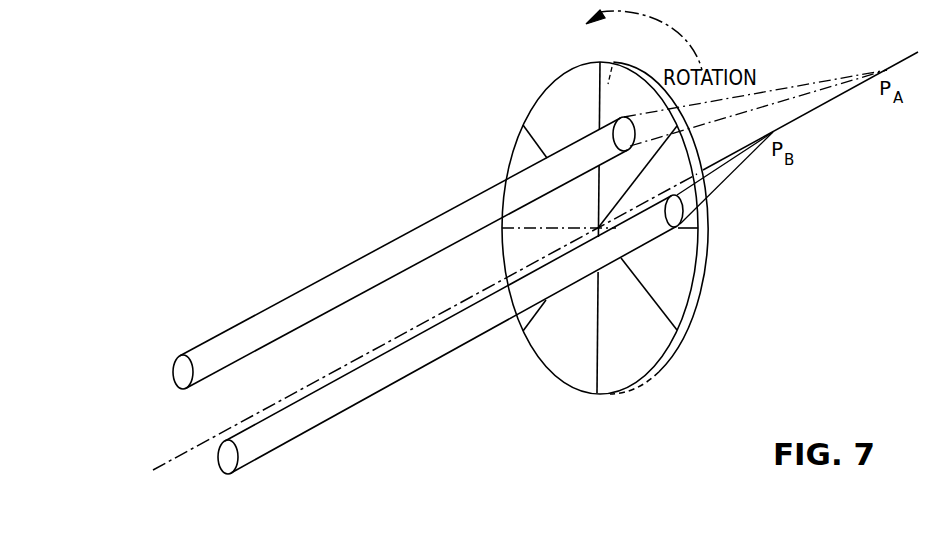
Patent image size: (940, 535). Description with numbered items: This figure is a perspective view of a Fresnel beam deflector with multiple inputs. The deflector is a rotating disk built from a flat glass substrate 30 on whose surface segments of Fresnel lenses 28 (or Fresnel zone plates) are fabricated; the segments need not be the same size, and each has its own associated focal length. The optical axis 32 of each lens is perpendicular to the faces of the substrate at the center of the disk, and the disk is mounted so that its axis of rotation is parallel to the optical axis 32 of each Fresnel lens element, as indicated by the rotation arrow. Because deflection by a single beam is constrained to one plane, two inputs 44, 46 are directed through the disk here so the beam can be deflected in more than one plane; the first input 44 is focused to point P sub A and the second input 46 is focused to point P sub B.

The Fresnel lenses 28 is at (604, 63).
The flat glass substrate 30 is at (703, 290).
The optical axis 32 is at (178, 457).
The input 44 is at (418, 228).
The input 46 is at (381, 390).